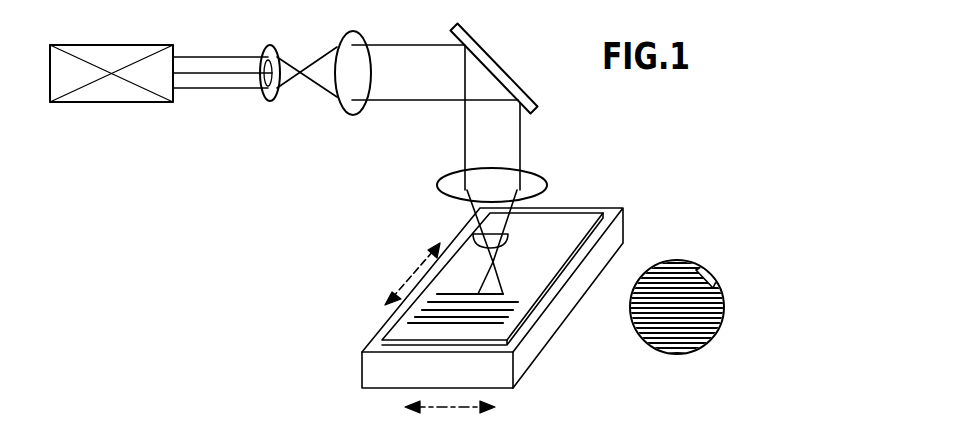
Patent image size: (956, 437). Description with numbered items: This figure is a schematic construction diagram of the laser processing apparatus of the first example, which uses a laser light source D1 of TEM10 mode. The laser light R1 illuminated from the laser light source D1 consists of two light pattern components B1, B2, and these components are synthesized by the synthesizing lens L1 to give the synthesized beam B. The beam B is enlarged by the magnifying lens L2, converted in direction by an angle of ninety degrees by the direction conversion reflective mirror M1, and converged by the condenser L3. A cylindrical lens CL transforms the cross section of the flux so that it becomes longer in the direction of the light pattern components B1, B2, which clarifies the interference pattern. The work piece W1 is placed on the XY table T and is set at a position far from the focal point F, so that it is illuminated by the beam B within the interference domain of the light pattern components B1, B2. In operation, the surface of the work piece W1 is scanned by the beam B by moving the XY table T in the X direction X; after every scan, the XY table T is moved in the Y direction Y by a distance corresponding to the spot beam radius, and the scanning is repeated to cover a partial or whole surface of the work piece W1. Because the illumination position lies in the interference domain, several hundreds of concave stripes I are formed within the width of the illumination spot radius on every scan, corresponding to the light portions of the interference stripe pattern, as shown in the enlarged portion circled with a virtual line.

The laser light source D1 is at (112, 55).
The light pattern component B1 is at (210, 63).
The laser light R1 is at (192, 82).
The light pattern component B2 is at (245, 82).
The synthesizing lens L1 is at (270, 50).
The magnifying lens L2 is at (360, 33).
The direction conversion reflective mirror M1 is at (520, 82).
The synthesized beam B is at (493, 147).
The condenser L3 is at (547, 178).
The cylindrical lens CL is at (470, 238).
The focal point F is at (495, 262).
The work piece W1 is at (593, 244).
The concave stripes I is at (732, 248).
The XY table T is at (392, 313).
The Y direction Y is at (403, 286).
The X direction X is at (440, 409).